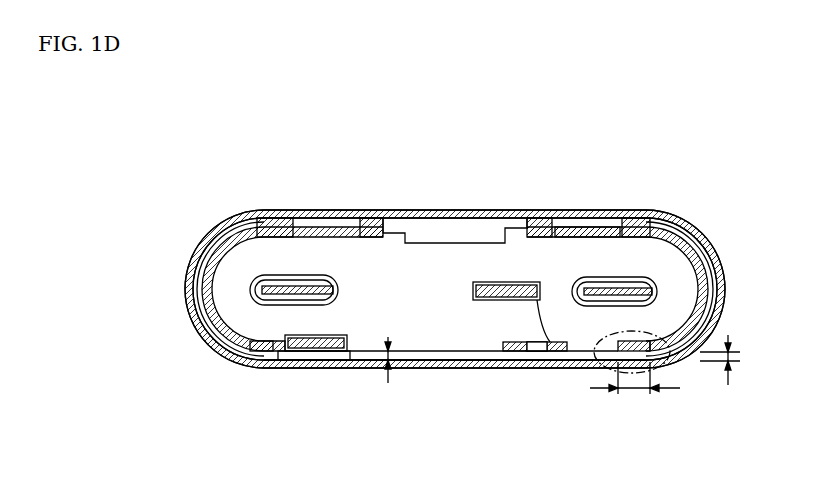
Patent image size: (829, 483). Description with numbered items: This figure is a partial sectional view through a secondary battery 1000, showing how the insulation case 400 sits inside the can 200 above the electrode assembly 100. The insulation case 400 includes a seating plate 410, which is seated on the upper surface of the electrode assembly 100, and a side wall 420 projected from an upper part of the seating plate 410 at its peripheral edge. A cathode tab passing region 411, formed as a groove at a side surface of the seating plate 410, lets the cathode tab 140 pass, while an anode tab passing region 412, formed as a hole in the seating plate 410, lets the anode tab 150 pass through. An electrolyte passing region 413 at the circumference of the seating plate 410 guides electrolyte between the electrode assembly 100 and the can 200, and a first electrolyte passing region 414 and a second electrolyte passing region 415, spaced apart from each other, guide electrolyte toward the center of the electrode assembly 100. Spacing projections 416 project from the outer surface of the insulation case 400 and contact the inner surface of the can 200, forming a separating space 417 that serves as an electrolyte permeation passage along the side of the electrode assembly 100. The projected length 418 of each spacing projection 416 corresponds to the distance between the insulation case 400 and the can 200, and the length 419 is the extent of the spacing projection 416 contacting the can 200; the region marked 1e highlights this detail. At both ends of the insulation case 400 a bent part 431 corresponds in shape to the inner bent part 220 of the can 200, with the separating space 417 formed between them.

The secondary battery 1000 is at (121, 137).
The electrode assembly 100 is at (688, 240).
The cathode tab 140 is at (301, 351).
The anode tab 150 is at (497, 300).
The can 200 is at (668, 214).
The inner bent part 220 is at (212, 241).
The insulation case 400 is at (720, 262).
The seating plate 410 is at (420, 238).
The cathode tab passing region 411 is at (340, 360).
The anode tab passing region 412 is at (556, 352).
The electrolyte passing region 413 is at (468, 242).
The first electrolyte passing region 414 is at (313, 275).
The second electrolyte passing region 415 is at (604, 277).
The spacing projection 416 is at (271, 218).
The separating space 417 is at (243, 214).
The projected length 418 is at (733, 357).
The length 419 is at (635, 392).
The side wall 420 is at (569, 230).
The bent part 431 is at (188, 281).
The region 1e is at (668, 372).